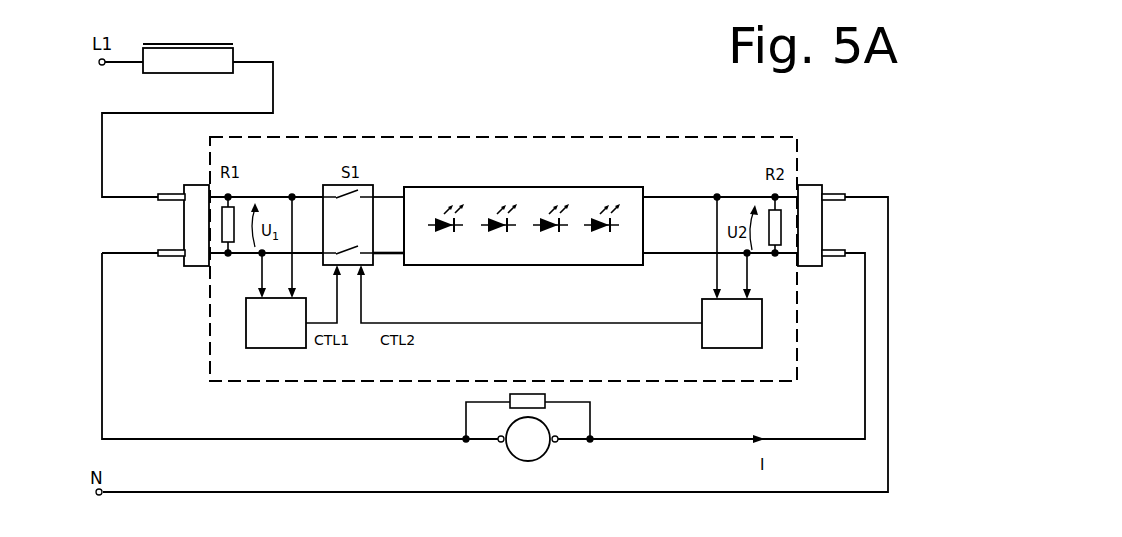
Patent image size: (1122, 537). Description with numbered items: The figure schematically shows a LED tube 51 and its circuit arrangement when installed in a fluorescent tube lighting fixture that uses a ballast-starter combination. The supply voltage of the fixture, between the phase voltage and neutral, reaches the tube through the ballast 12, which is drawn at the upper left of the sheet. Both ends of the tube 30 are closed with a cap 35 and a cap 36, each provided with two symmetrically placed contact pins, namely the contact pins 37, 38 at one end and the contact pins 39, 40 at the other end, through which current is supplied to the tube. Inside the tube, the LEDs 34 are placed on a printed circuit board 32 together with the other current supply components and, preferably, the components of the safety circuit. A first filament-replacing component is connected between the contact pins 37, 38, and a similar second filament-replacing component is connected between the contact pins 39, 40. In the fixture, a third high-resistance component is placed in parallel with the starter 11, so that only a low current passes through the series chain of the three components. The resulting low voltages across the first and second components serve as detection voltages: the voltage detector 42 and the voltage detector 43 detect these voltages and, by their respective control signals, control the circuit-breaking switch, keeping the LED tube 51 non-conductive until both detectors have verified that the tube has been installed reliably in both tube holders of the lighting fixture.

The starter 11 is at (512, 456).
The ballast 12 is at (193, 73).
The tube 30 is at (618, 137).
The printed circuit board 32 is at (531, 246).
The LEDs 34 is at (447, 233).
The cap 35 is at (187, 185).
The cap 36 is at (812, 185).
The contact pin 37 is at (166, 193).
The contact pin 38 is at (168, 257).
The contact pin 39 is at (840, 194).
The contact pin 40 is at (838, 258).
The voltage detector 42 is at (306, 348).
The voltage detector 43 is at (702, 348).
The LED tube 51 is at (540, 116).